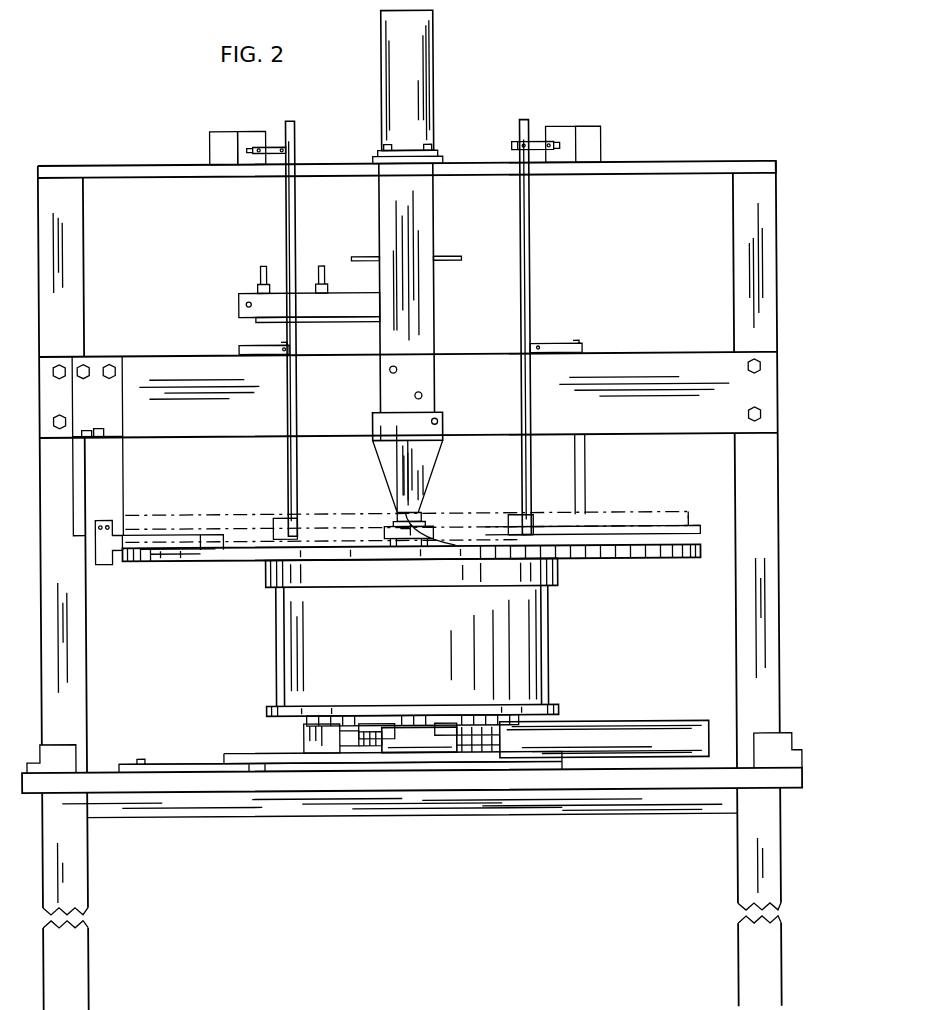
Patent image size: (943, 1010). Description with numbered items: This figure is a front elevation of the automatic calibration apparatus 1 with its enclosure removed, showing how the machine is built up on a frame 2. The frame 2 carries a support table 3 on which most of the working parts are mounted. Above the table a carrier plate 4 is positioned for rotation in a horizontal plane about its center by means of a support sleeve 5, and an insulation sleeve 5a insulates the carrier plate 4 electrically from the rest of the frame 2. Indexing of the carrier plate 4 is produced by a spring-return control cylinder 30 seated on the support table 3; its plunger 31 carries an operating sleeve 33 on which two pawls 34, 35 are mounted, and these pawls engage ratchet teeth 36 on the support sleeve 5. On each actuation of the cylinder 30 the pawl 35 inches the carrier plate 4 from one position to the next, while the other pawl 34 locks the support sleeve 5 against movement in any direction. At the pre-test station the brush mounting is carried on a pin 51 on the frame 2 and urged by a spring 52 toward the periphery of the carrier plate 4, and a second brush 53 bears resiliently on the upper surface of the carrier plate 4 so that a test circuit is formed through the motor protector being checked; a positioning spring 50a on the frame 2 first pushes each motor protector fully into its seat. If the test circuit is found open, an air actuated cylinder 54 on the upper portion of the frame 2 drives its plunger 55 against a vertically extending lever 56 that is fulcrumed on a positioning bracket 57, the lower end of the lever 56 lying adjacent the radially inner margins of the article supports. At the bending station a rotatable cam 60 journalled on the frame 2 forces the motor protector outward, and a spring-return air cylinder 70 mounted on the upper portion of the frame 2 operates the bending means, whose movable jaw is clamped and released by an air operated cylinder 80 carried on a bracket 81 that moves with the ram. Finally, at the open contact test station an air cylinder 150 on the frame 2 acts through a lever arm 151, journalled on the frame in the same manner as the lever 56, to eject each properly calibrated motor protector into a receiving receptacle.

The automatic calibration apparatus 1 is at (111, 147).
The frame 2 is at (85, 692).
The support table 3 is at (95, 776).
The carrier plate 4 is at (605, 560).
The support sleeve 5 is at (545, 648).
The insulation sleeve 5a is at (270, 580).
The control cylinder 30 is at (586, 728).
The plunger 31 is at (484, 754).
The operating sleeve 33 is at (428, 754).
The pawl 34 is at (372, 722).
The pawl 35 is at (440, 722).
The ratchet teeth 36 is at (306, 728).
The positioning spring 50a is at (115, 562).
The pin 51 is at (100, 433).
The spring 52 is at (88, 430).
The second brush 53 is at (400, 475).
The air actuated cylinder 54 is at (229, 135).
The plunger 55 is at (259, 145).
The lever 56 is at (297, 250).
The positioning bracket 57 is at (272, 353).
The cam 60 is at (422, 514).
The air cylinder 70 is at (425, 95).
The air operated cylinder 80 is at (310, 320).
The bracket 81 is at (246, 311).
The air cylinder 150 is at (604, 140).
The lever arm 151 is at (535, 256).